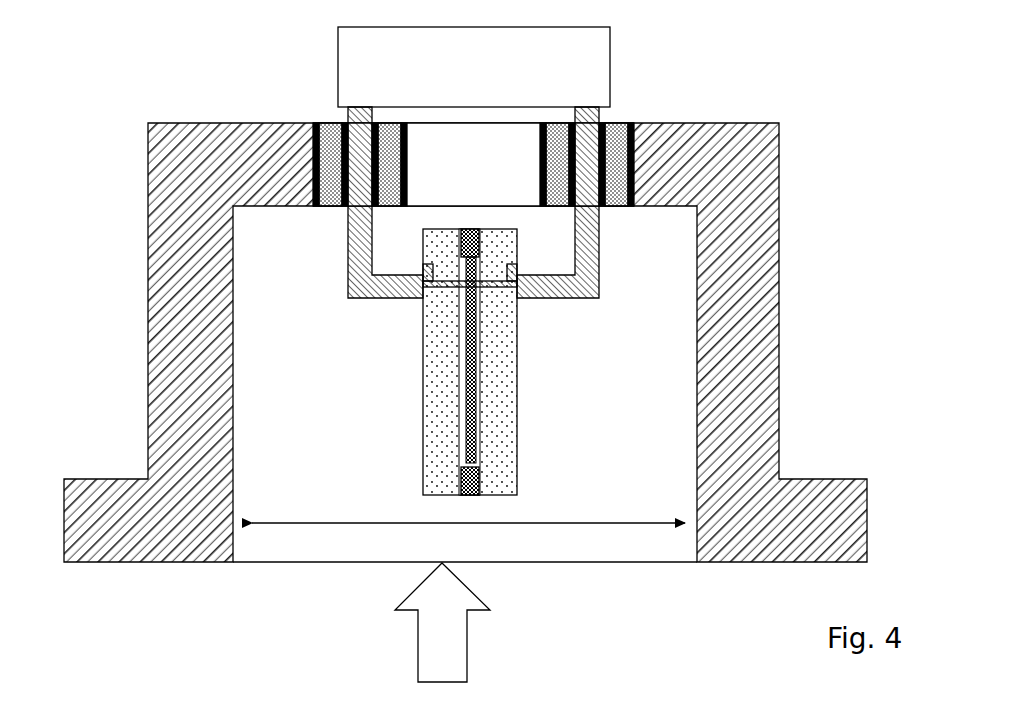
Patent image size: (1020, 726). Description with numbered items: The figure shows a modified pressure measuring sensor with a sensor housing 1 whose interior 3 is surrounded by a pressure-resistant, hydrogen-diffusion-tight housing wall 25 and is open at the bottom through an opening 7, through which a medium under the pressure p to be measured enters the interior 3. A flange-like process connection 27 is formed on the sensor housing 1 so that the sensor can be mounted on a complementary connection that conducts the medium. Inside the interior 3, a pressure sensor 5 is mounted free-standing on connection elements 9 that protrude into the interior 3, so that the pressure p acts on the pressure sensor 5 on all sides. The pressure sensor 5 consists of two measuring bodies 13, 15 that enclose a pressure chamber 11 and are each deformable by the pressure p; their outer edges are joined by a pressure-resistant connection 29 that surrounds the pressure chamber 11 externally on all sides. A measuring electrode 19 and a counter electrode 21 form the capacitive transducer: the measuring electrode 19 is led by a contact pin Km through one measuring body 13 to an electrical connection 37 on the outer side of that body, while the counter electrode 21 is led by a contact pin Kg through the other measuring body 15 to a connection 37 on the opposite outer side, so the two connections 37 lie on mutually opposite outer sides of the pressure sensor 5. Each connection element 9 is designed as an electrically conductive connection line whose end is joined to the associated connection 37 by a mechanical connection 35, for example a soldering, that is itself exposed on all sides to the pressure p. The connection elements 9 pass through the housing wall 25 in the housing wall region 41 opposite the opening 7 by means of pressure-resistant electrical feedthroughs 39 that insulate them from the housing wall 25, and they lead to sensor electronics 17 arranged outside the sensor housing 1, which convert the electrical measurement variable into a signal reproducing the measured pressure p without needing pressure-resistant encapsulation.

The sensor housing 1 is at (123, 392).
The interior 3 is at (465, 384).
The pressure sensor 5 is at (550, 385).
The opening 7 is at (408, 523).
The connection elements 9 is at (349, 281).
The pressure chamber 11 is at (458, 382).
The measuring body 13 is at (448, 442).
The measuring body 15 is at (502, 445).
The sensor electronics 17 is at (474, 67).
The measuring electrode 19 is at (461, 350).
The counter electrode 21 is at (480, 378).
The housing wall 25 is at (162, 268).
The process connection 27 is at (130, 523).
The pressure-resistant connection 29 is at (480, 494).
The mechanical connection 35 is at (425, 288).
The electrical connection 37 is at (423, 278).
The pressure-resistant electrical feedthrough 39 is at (333, 122).
The housing wall region 41 is at (473, 164).
The contact pin Km is at (443, 290).
The contact pin Kg is at (497, 290).
The pressure p is at (427, 622).